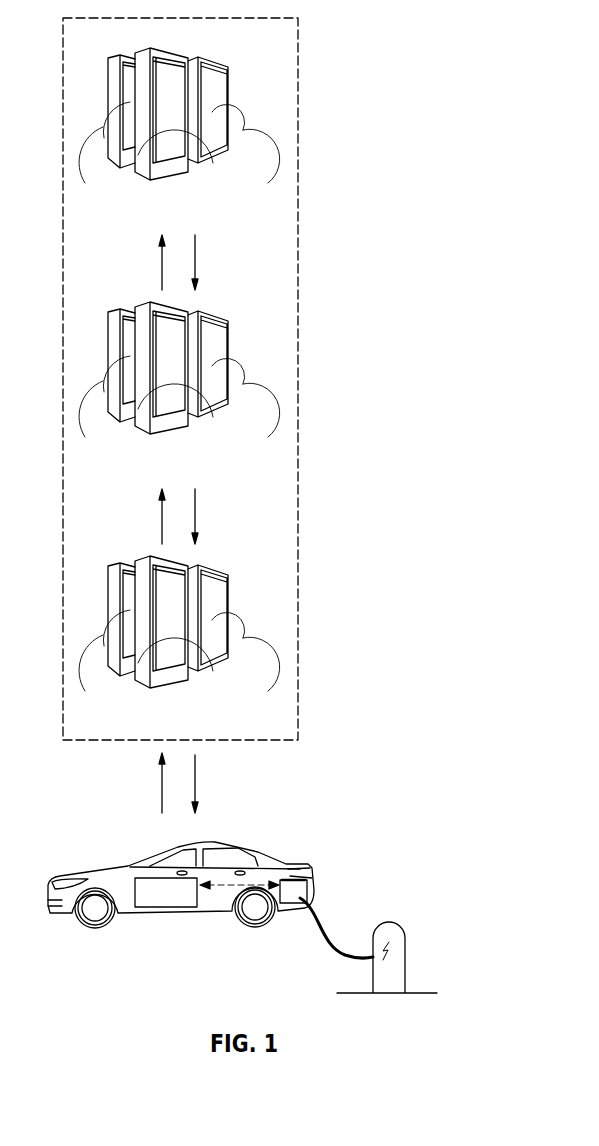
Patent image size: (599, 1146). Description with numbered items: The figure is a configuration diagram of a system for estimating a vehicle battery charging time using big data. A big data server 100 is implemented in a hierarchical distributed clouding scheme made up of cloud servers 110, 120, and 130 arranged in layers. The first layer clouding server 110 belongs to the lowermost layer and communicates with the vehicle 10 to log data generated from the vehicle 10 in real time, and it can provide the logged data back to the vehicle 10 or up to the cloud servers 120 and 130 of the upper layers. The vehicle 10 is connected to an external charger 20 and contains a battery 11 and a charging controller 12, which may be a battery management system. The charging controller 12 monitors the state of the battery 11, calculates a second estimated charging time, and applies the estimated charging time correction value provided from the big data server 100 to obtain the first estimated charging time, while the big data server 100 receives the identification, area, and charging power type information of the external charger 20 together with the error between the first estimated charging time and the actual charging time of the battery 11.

The big data server 100 is at (239, 415).
The first layer clouding server 110 is at (218, 588).
The cloud server 120 is at (218, 334).
The cloud server 130 is at (218, 87).
The vehicle 10 is at (233, 843).
The battery 11 is at (292, 905).
The charging controller 12 is at (150, 912).
The external charger 20 is at (388, 928).